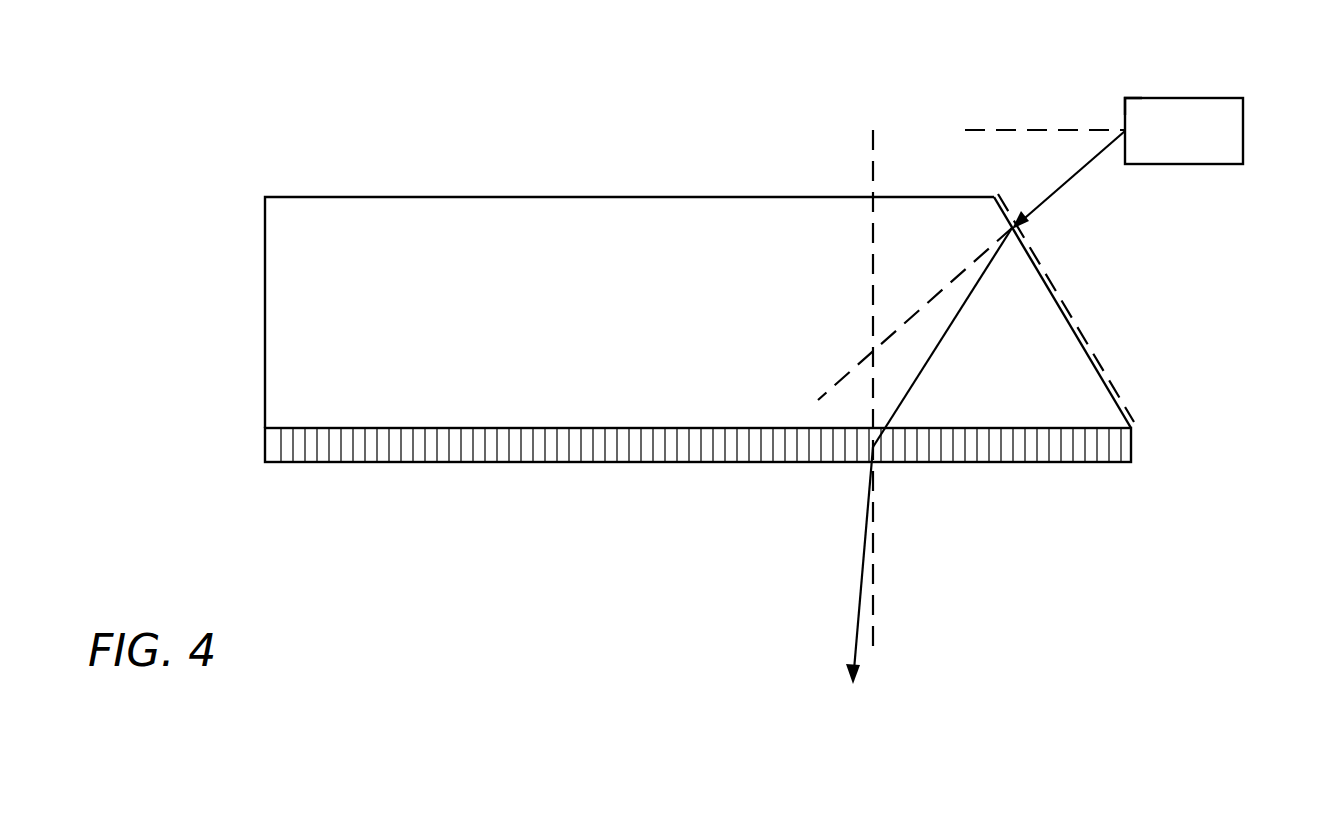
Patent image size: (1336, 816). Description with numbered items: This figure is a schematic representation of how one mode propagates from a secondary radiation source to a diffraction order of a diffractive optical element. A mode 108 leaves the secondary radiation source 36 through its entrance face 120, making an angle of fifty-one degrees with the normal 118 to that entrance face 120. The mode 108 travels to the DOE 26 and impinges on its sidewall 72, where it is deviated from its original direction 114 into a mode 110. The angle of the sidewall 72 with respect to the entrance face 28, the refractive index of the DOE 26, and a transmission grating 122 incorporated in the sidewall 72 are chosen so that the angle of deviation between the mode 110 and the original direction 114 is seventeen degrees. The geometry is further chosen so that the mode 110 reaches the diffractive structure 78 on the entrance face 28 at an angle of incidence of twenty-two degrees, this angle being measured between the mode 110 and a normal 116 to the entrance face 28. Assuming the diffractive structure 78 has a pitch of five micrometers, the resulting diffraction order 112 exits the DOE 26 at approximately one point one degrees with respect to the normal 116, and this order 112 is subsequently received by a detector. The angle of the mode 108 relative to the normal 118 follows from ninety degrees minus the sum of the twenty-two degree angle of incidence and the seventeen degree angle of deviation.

The DOE 26 is at (331, 213).
The entrance face 28 is at (1060, 462).
The diffractive structure 78 is at (943, 440).
The sidewall 72 is at (996, 218).
The transmission grating 122 is at (1065, 306).
The secondary radiation source 36 is at (1243, 130).
The entrance face 120 is at (1124, 100).
The normal 118 is at (1013, 130).
The mode 108 is at (1073, 177).
The mode 110 is at (940, 348).
The diffraction order 112 is at (858, 610).
The original direction 114 is at (854, 372).
The normal 116 is at (871, 160).